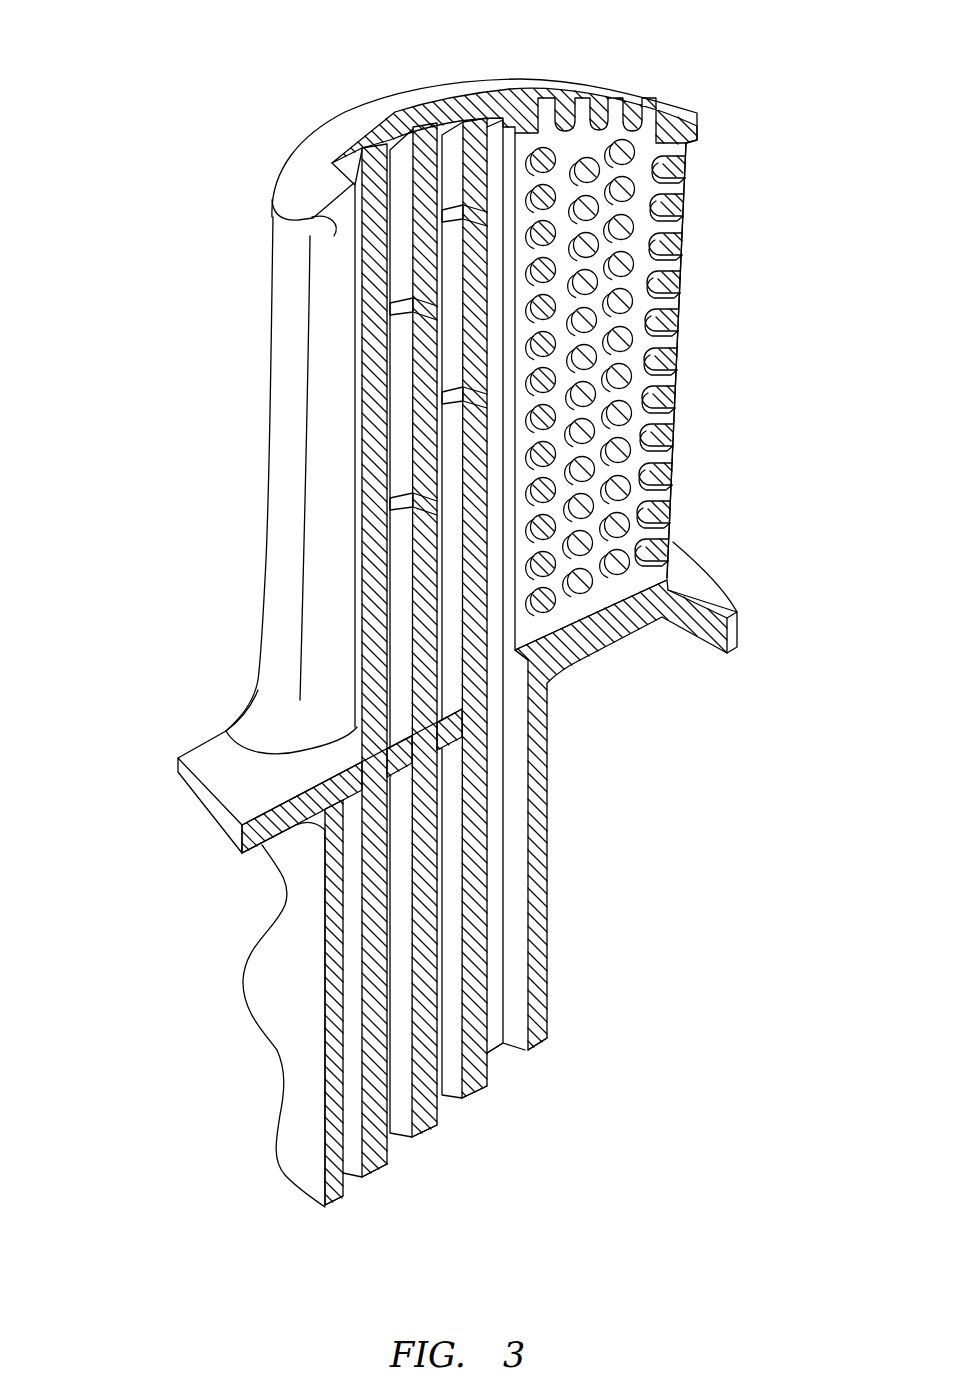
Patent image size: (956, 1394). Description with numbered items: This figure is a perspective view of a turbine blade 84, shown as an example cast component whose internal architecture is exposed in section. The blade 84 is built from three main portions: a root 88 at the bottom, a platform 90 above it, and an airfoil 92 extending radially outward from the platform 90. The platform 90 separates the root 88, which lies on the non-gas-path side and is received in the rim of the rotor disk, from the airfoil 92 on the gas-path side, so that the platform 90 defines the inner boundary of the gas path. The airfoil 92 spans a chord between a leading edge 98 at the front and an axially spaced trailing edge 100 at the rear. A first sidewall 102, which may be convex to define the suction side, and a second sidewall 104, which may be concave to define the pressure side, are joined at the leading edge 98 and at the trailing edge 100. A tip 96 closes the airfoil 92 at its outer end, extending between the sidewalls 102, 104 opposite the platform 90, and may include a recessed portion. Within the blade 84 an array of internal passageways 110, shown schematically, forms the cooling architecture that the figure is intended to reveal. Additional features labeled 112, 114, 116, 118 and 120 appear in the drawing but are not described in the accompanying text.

The blade 84 is at (748, 100).
The tip 96 is at (415, 100).
The first sidewall 102 is at (292, 165).
The second sidewall 104 is at (308, 230).
The airfoil 92 is at (178, 330).
The leading edge 98 is at (287, 576).
The internal passageways 110 is at (455, 425).
The trailing edge 100 is at (693, 298).
The pin fins 120 is at (630, 378).
The trailing edge wall pins 114 is at (635, 456).
The platform 90 is at (160, 790).
The root 88 is at (235, 1026).
The root cooling passage 112 is at (515, 1080).
The rib ends 116 is at (456, 1084).
The root wall 118 is at (298, 1144).